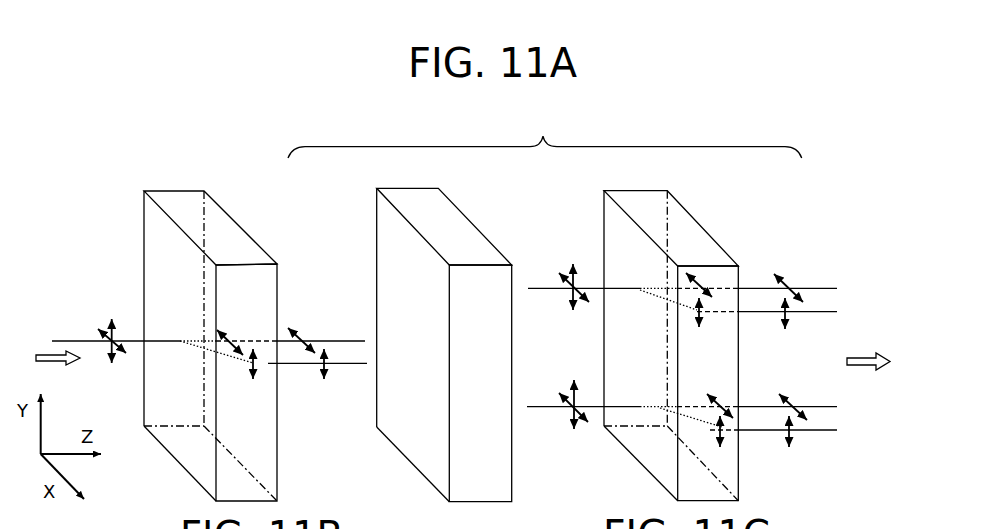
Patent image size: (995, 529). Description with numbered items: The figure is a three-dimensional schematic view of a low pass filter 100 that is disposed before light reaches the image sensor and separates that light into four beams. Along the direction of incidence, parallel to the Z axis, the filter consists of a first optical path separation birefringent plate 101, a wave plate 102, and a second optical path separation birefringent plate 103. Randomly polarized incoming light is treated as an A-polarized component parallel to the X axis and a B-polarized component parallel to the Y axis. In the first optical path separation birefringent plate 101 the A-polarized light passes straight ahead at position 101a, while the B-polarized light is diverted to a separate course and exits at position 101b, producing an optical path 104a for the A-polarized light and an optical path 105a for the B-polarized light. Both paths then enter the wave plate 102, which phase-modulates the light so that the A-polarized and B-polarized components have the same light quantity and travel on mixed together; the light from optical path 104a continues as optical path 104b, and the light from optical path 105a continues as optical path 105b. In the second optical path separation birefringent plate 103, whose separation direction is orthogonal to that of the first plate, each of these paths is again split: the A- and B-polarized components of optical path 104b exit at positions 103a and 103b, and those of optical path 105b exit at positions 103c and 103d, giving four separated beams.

The low pass filter 100 is at (565, 124).
The first optical path separation birefringent plate 101 is at (238, 222).
The position where the A-polarized light passes through the first optical path separ 101a is at (232, 338).
The position where the B-polarized light passes through the first optical path separ 101b is at (258, 365).
The wave plate 102 is at (467, 218).
The second optical path separation birefringent plate 103 is at (700, 227).
The position where the A-polarized light separated from optical path 104b passes thr 103a is at (705, 288).
The position where the B-polarized light separated from optical path 104b passes thr 103b is at (705, 313).
The position where the A-polarized light separated from optical path 105b passes thr 103c is at (728, 406).
The position where the B-polarized light separated from optical path 105b passes thr 103d is at (728, 430).
The optical path of the A-polarized light 104a is at (347, 320).
The optical path 104b is at (530, 287).
The optical path of the B-polarized light 105a is at (337, 364).
The optical path 105b is at (540, 409).